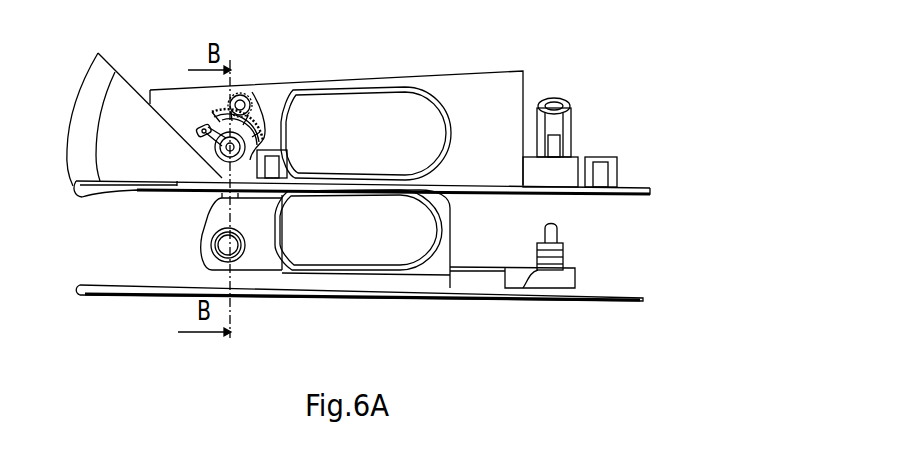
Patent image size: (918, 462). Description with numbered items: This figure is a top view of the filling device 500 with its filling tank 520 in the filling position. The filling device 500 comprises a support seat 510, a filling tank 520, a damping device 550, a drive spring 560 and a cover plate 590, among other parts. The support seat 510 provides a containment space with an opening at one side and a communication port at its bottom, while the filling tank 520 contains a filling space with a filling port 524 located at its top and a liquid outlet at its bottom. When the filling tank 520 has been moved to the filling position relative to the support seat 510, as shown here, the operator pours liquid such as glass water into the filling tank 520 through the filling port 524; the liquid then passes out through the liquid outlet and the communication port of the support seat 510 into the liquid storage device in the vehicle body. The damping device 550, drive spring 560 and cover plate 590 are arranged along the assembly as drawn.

The filling device 500 is at (718, 111).
The support seat 510 is at (468, 93).
The filling tank 520 is at (388, 289).
The filling port 524 is at (377, 243).
The damping device 550 is at (252, 101).
The drive spring 560 is at (212, 128).
The cover plate 590 is at (318, 286).